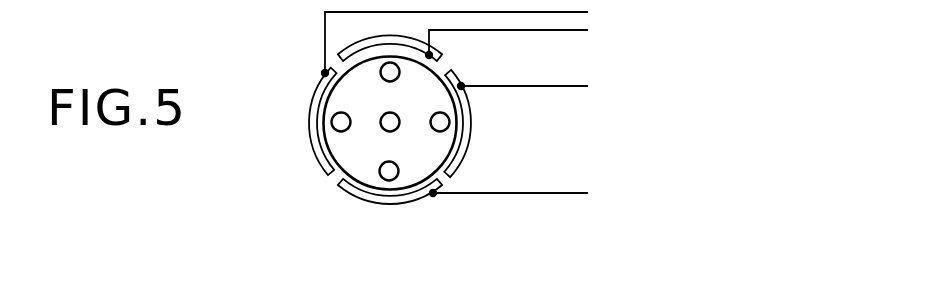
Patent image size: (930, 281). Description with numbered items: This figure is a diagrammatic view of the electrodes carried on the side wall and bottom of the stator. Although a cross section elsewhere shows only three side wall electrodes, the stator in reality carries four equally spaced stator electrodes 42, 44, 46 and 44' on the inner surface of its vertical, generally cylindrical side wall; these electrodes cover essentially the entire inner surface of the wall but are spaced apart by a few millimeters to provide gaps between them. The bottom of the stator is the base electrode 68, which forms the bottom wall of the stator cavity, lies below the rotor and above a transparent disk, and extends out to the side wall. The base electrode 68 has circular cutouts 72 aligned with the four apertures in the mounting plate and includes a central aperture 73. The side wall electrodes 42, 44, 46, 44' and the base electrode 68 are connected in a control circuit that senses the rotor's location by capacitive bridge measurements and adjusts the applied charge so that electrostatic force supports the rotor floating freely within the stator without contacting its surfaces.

The stator electrode 42 is at (315, 113).
The stator electrode 44 is at (429, 44).
The stator electrode 44' is at (463, 222).
The stator electrode 46 is at (472, 138).
The base electrode 68 is at (338, 148).
The circular cutouts 72 is at (389, 161).
The central aperture 73 is at (380, 120).